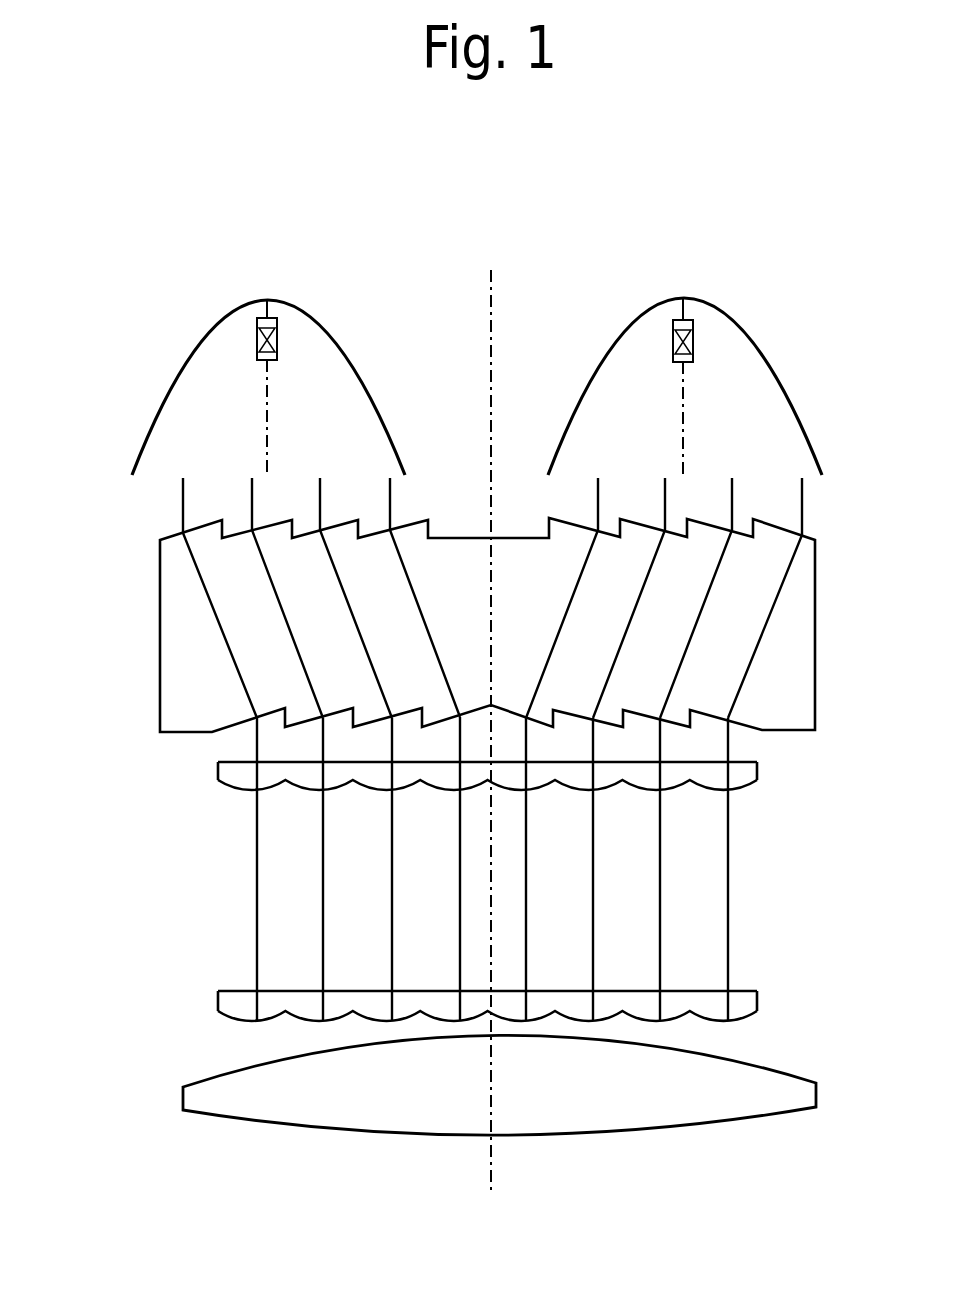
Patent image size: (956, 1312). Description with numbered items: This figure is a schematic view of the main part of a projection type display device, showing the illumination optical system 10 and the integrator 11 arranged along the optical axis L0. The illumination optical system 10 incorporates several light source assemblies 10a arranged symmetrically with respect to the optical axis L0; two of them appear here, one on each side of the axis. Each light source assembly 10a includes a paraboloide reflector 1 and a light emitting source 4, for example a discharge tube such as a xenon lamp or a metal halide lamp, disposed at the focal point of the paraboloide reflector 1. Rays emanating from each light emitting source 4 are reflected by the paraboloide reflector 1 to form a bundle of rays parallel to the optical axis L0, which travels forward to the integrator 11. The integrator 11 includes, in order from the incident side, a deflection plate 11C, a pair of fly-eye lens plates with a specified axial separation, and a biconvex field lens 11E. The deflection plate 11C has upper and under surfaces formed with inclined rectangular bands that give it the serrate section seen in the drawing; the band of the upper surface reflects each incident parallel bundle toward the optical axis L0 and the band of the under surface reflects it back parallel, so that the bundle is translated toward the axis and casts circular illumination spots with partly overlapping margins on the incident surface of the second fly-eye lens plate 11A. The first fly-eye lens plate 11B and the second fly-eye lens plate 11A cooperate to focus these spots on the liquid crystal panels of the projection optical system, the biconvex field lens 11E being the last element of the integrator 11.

The paraboloide reflector 1 is at (153, 414).
The light emitting source 4 is at (275, 338).
The illumination optical system 10 is at (617, 279).
The light source assembly 10a is at (173, 378).
The integrator 11 is at (143, 606).
The second fly-eye lens plate 11A is at (218, 773).
The first fly-eye lens plate 11B is at (218, 1005).
The deflection plate 11C is at (159, 668).
The biconvex field lens 11E is at (181, 1098).
The optical axis L0 is at (488, 1178).